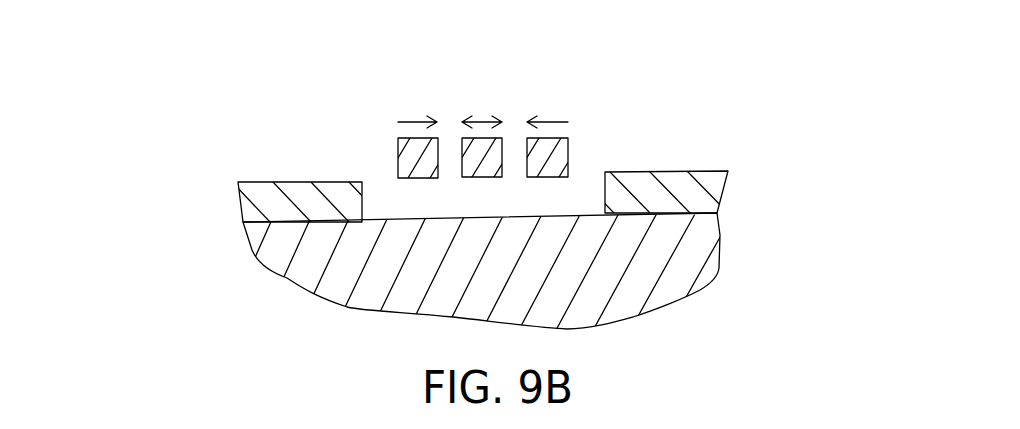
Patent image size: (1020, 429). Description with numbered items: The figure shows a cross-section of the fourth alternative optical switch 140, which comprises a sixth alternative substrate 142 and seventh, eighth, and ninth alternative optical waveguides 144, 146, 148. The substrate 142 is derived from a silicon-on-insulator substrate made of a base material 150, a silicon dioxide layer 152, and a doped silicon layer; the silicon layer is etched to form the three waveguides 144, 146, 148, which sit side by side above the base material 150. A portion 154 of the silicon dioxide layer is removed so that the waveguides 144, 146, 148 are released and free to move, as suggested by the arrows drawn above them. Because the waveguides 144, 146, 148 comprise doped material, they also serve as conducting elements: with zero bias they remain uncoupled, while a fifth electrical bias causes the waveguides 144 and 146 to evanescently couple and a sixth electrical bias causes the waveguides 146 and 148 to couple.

The fourth alternative optical switch 140 is at (208, 150).
The sixth alternative substrate 142 is at (757, 295).
The seventh alternative optical waveguide 144 is at (398, 141).
The eighth alternative optical waveguide 146 is at (468, 178).
The ninth alternative optical waveguide 148 is at (571, 141).
The base material 150 is at (280, 278).
The silicon dioxide layer 152 is at (243, 212).
The portion of the silicon dioxide layer 154 is at (591, 180).